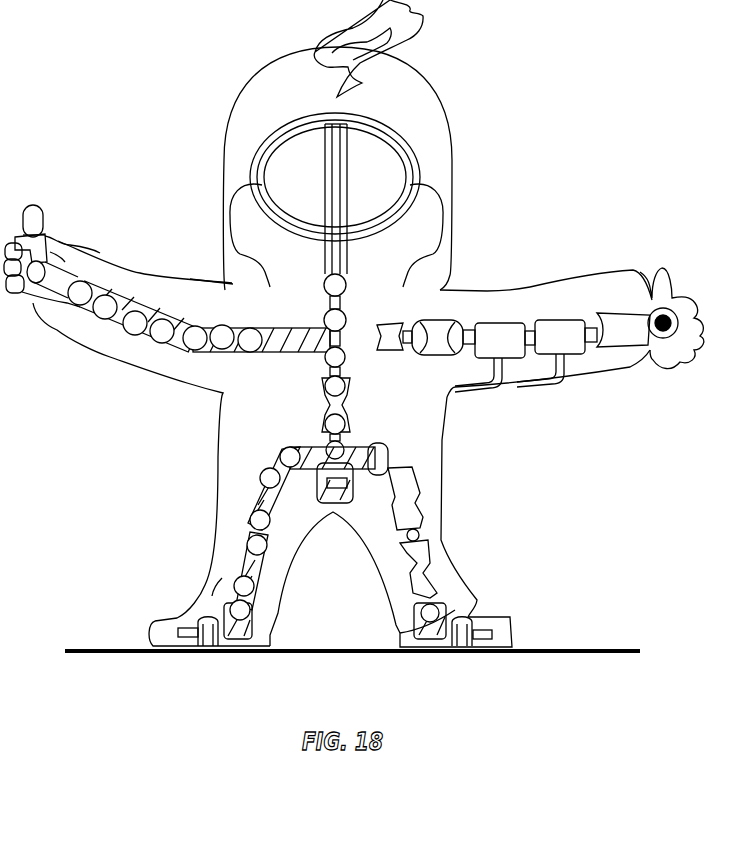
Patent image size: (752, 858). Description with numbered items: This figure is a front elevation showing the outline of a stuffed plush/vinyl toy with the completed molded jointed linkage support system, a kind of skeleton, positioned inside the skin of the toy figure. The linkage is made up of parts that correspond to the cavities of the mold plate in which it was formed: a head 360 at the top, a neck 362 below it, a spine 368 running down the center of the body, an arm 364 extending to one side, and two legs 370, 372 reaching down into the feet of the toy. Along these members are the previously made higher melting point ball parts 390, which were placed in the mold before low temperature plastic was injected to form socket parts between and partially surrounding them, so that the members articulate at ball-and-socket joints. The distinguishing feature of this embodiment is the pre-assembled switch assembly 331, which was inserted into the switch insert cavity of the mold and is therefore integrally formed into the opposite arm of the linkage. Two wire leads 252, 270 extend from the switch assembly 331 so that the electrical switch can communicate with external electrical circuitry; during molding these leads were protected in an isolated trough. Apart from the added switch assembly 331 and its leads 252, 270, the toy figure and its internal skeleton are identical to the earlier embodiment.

The head 360 is at (250, 165).
The neck 362 is at (232, 240).
The arm 364 is at (118, 300).
The ball part 390 is at (80, 290).
The spine 368 is at (322, 405).
The switch assembly 331 is at (500, 325).
The lead 252 is at (450, 388).
The electrical lead 270 is at (525, 380).
The leg 370 is at (240, 565).
The leg 372 is at (438, 548).